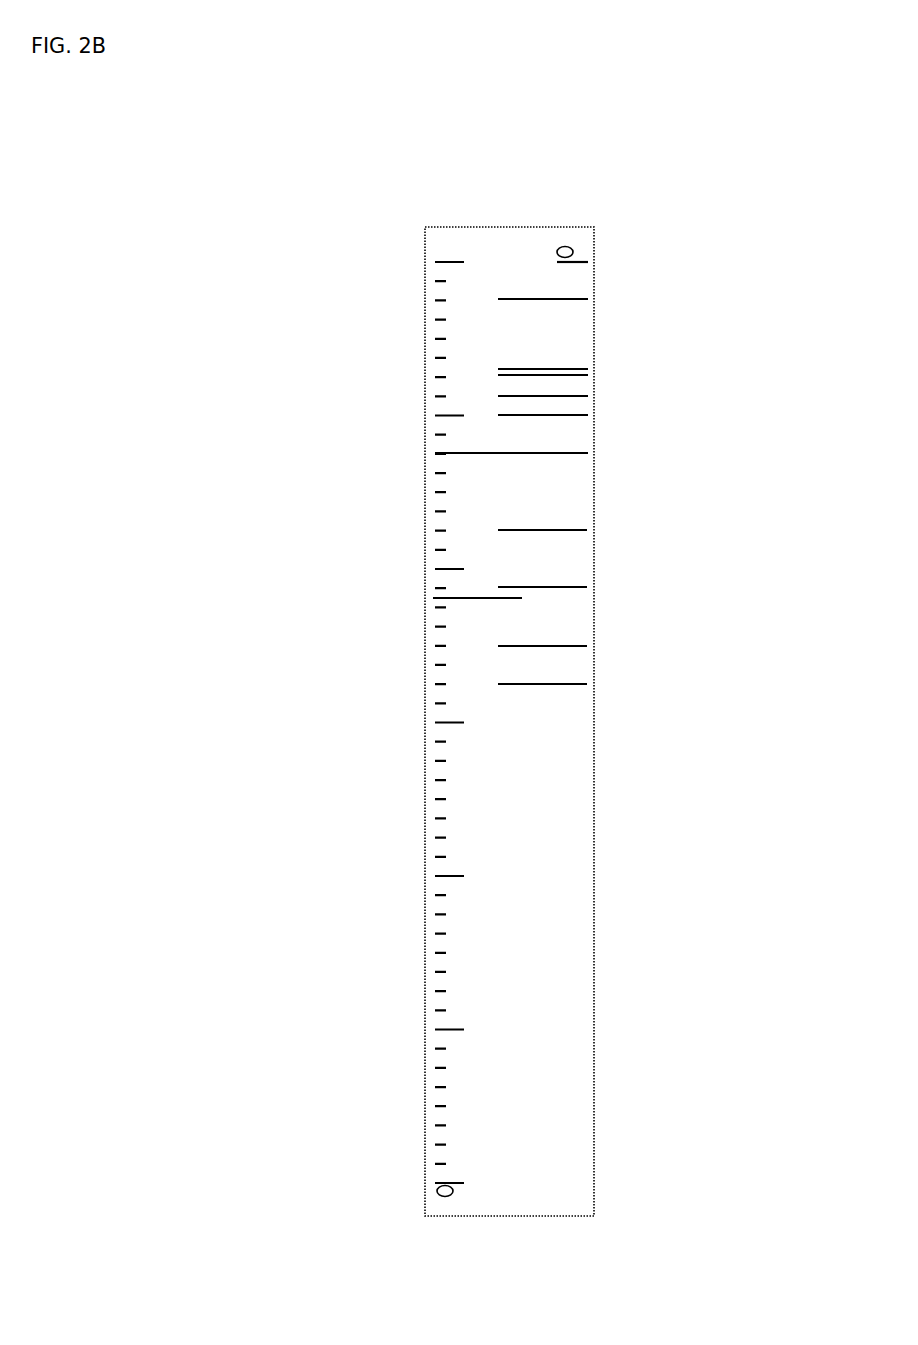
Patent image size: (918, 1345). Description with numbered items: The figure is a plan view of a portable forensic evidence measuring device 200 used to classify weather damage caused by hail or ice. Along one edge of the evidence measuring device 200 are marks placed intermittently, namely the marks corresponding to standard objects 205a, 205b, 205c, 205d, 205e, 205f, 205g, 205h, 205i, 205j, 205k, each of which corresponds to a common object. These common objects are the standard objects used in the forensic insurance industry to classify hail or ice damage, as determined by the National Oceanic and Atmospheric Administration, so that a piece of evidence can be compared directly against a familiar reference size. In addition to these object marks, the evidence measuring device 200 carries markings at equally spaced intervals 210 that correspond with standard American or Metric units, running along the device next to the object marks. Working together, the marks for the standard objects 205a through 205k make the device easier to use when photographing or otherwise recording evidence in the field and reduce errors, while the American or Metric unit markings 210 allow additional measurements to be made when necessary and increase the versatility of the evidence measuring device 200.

The evidence measuring device 200 is at (470, 682).
The markings at equally spaced intervals 210 is at (423, 722).
The mark corresponding to standard object 205a is at (655, 292).
The mark corresponding to standard object 205b is at (573, 351).
The mark corresponding to standard object 205c is at (572, 371).
The mark corresponding to standard object 205d is at (573, 393).
The mark corresponding to standard object 205e is at (524, 428).
The mark corresponding to standard object 205f is at (542, 452).
The mark corresponding to standard object 205g is at (574, 520).
The mark corresponding to standard object 205h is at (574, 585).
The mark corresponding to standard object 205i is at (571, 693).
The mark corresponding to standard object 205j is at (522, 646).
The mark corresponding to standard object 205k is at (439, 595).